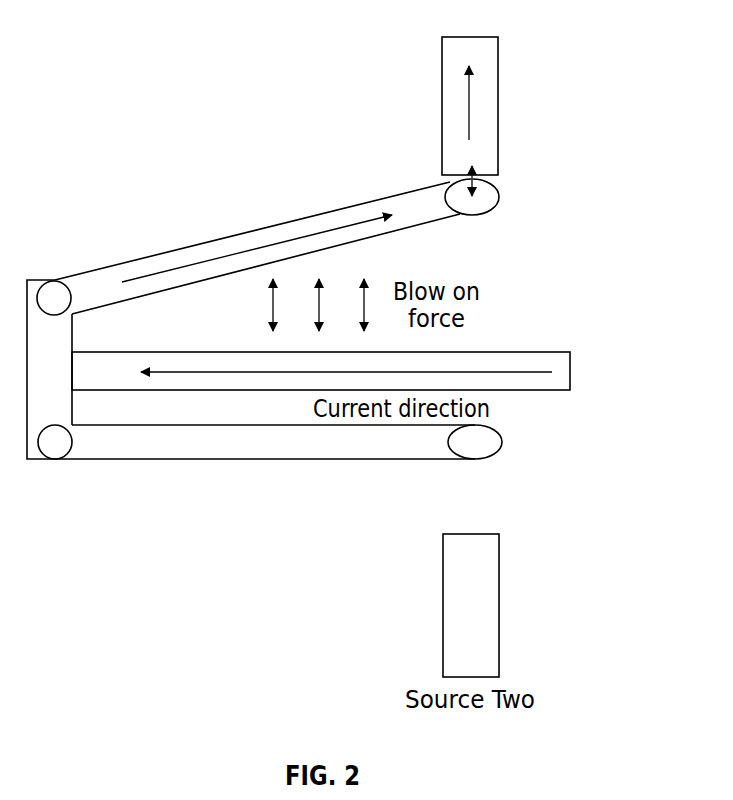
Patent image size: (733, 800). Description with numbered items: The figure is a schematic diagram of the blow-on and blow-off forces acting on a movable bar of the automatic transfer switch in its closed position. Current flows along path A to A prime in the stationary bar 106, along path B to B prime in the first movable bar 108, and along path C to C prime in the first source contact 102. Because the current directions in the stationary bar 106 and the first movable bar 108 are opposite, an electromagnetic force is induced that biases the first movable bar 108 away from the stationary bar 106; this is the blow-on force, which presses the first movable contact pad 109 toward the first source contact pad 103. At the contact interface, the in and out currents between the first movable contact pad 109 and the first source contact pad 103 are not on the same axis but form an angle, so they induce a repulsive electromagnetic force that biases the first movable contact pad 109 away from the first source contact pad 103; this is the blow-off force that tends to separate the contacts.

The first source contact 102 is at (498, 93).
The first source contact pad 103 is at (498, 170).
The stationary bar 106 is at (572, 355).
The first movable bar 108 is at (262, 232).
The first movable contact pad 109 is at (472, 215).